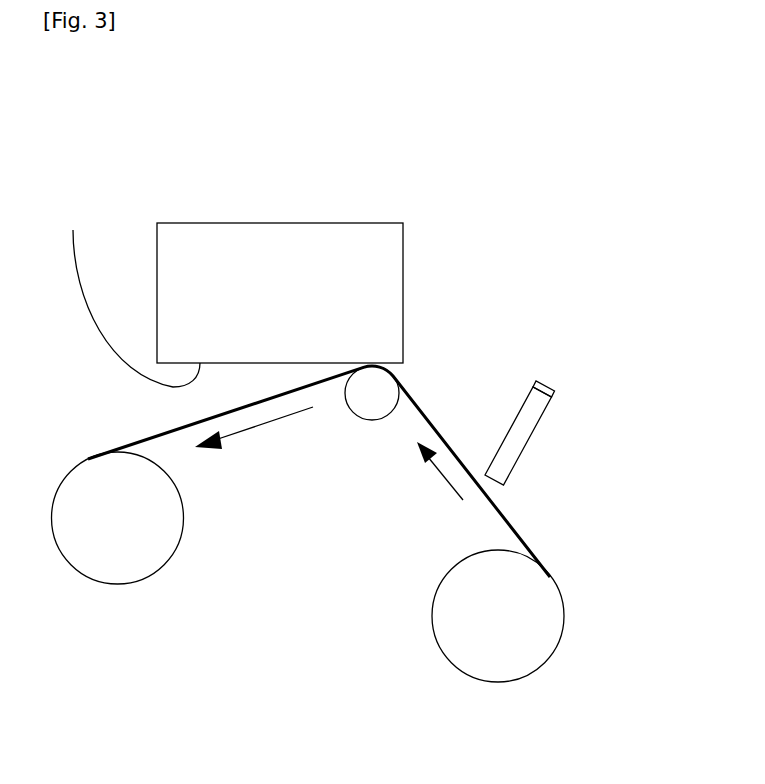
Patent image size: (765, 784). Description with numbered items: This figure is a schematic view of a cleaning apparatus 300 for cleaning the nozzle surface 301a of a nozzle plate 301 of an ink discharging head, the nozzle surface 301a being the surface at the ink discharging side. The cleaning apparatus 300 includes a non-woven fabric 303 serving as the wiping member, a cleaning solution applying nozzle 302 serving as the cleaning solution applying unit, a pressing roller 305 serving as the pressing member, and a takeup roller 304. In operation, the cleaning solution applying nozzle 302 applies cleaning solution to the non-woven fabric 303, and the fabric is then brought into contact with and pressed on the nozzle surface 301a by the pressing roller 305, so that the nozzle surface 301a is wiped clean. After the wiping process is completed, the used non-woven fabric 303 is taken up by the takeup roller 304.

The cleaning apparatus 300 is at (556, 160).
The nozzle plate 301 is at (278, 237).
The nozzle surface 301a is at (122, 284).
The cleaning solution applying nozzle 302 is at (541, 392).
The non-woven fabric 303 is at (513, 523).
The takeup roller 304 is at (108, 573).
The pressing roller 305 is at (383, 388).